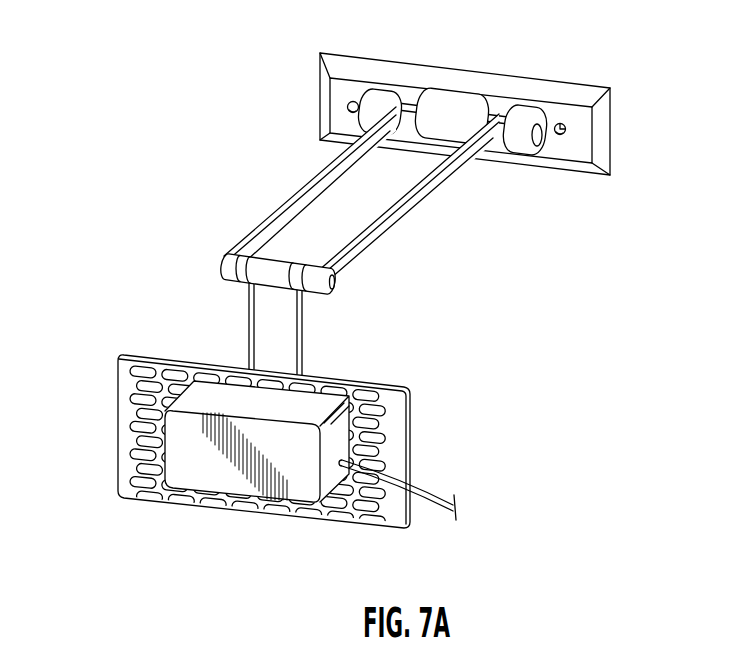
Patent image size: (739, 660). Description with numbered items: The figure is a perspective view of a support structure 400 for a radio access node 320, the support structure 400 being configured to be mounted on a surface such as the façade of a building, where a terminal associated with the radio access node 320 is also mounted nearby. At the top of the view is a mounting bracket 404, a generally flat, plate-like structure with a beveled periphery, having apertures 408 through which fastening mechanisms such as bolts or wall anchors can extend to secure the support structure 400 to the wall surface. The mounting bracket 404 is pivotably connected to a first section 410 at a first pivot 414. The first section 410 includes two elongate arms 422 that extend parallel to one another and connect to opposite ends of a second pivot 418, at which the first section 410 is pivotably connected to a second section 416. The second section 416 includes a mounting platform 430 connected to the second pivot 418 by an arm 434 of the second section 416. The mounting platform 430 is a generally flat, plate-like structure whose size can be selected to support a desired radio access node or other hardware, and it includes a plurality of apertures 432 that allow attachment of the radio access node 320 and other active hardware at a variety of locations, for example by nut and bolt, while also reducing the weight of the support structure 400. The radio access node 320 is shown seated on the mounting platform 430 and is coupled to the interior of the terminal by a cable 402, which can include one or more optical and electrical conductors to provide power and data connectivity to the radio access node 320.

The support structure 400 is at (580, 26).
The mounting bracket 404 is at (388, 78).
The apertures 408 is at (351, 101).
The first section 410 is at (261, 157).
The first pivot 414 is at (547, 150).
The elongate arms 422 is at (430, 197).
The second pivot 418 is at (345, 294).
The second section 416 is at (192, 318).
The arm 434 is at (300, 338).
The mounting platform 430 is at (402, 443).
The apertures 432 is at (130, 397).
The radio access node 320 is at (185, 485).
The cable 402 is at (436, 512).